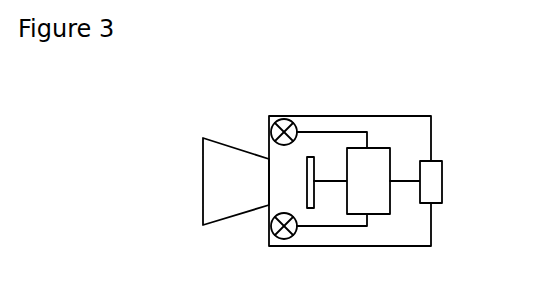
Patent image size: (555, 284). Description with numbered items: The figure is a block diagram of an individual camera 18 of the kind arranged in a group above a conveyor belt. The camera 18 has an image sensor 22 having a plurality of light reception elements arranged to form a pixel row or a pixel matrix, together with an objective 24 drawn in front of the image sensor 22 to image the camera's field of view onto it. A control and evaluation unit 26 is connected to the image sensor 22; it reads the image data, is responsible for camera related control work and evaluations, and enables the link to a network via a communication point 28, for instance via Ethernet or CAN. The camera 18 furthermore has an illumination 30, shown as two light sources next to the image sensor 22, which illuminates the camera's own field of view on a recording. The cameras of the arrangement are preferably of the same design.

The camera 18 is at (389, 144).
The image sensor 22 is at (328, 135).
The objective 24 is at (206, 168).
The control and evaluation unit 26 is at (383, 139).
The communication point 28 is at (463, 204).
The illumination 30 is at (297, 147).